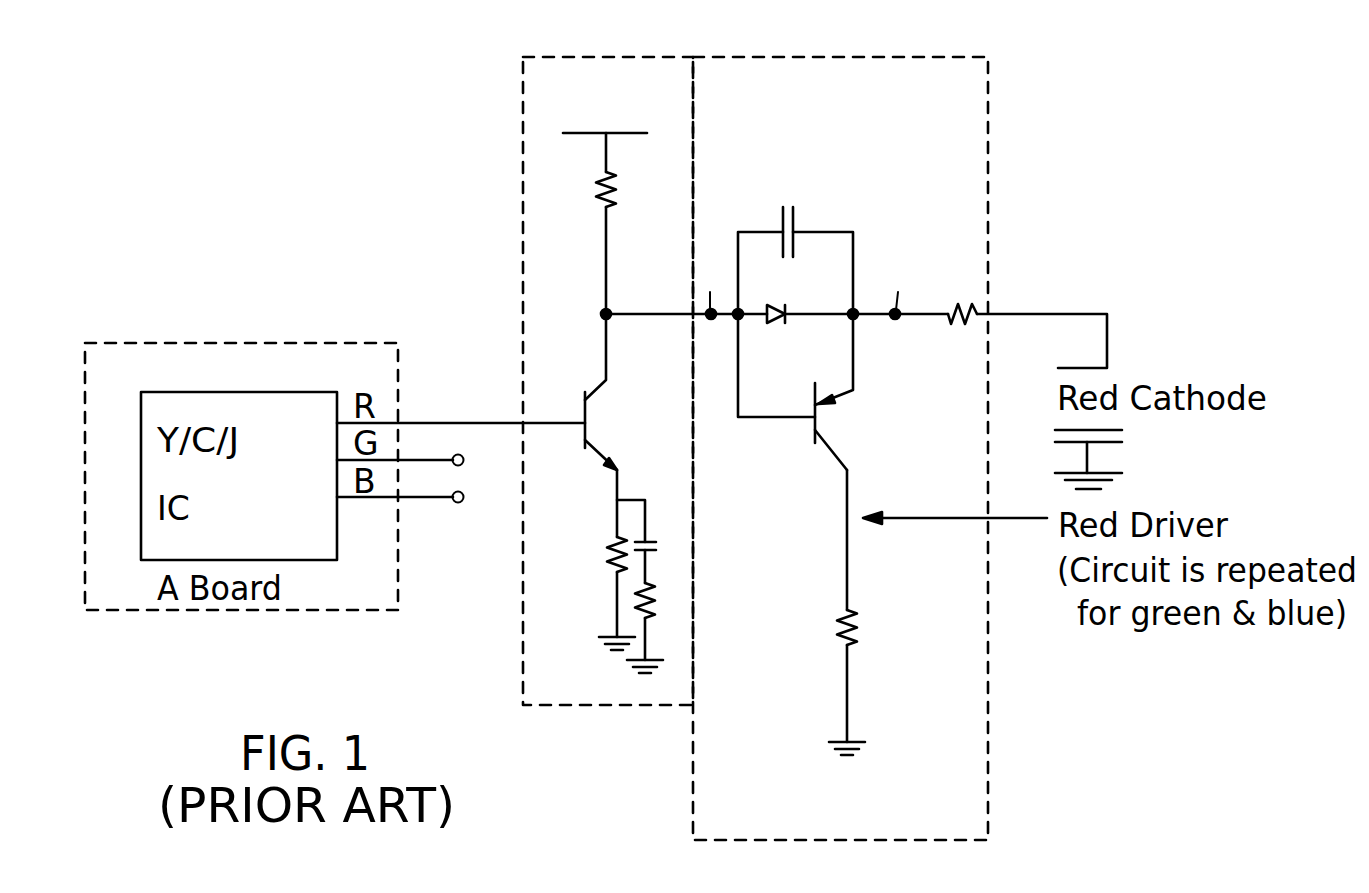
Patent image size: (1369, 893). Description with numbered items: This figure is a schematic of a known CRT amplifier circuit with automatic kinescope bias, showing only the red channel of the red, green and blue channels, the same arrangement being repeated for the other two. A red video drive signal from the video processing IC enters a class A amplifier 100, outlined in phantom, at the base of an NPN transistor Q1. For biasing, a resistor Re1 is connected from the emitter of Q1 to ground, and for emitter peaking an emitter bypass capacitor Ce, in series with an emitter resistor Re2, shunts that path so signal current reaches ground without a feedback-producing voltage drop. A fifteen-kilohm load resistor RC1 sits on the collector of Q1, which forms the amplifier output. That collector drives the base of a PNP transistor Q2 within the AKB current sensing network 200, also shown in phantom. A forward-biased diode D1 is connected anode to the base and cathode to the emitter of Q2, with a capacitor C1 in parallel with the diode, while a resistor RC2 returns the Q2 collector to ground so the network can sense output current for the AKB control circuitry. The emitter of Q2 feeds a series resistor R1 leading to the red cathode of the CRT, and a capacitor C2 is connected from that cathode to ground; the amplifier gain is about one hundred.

The amplifier 100 is at (665, 51).
The AKB current sensing network 200 is at (882, 51).
The NPN transistor Q1 is at (592, 447).
The PNP transistor Q2 is at (852, 450).
The load resistor RC1 is at (612, 203).
The resistor RC2 is at (859, 633).
The resistor Re1 is at (604, 553).
The emitter resistor in series with Ce Re2 is at (659, 592).
The emitter bypass capacitor Ce is at (668, 541).
The capacitor C1 is at (830, 218).
The forward-biased diode D1 is at (786, 344).
The resistor R1 is at (956, 304).
The capacitor C2 is at (1123, 459).